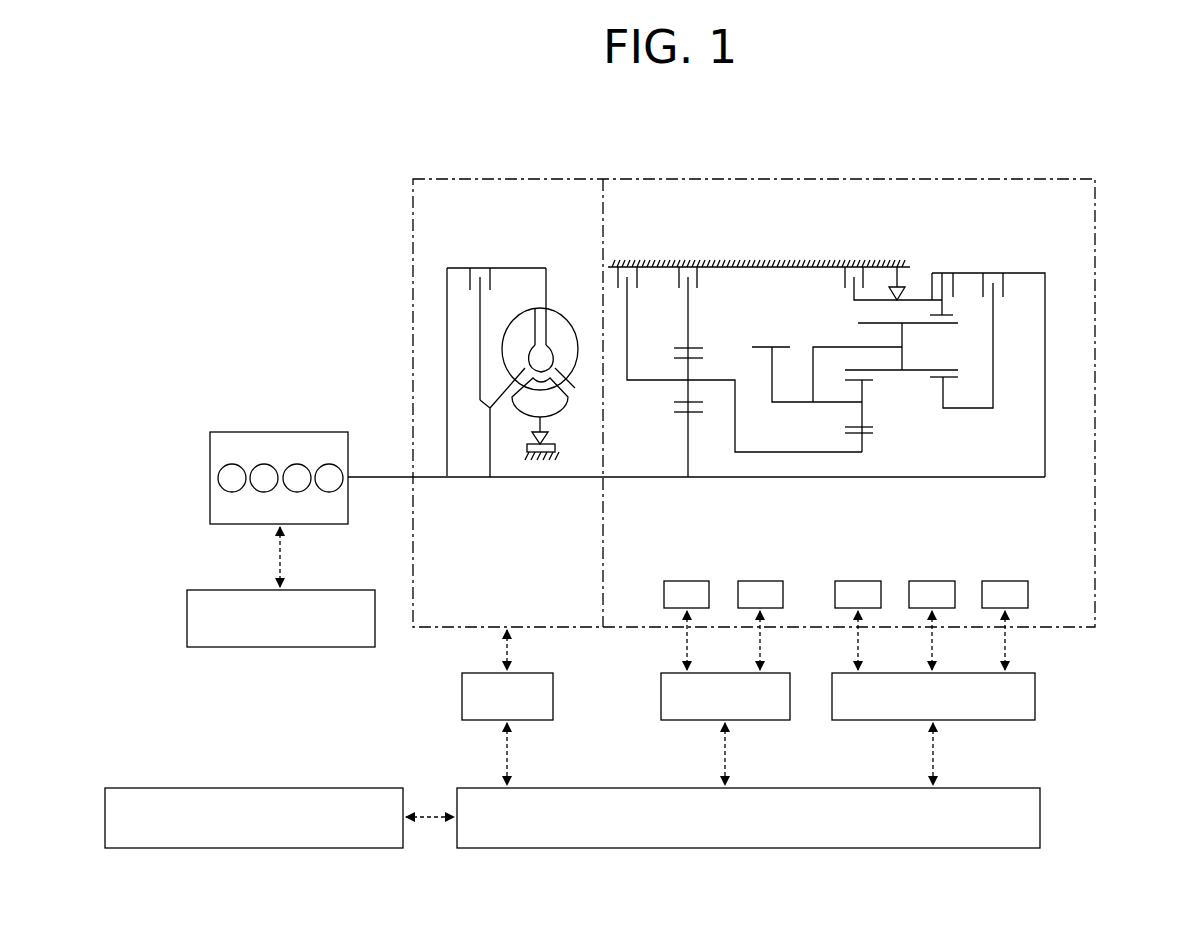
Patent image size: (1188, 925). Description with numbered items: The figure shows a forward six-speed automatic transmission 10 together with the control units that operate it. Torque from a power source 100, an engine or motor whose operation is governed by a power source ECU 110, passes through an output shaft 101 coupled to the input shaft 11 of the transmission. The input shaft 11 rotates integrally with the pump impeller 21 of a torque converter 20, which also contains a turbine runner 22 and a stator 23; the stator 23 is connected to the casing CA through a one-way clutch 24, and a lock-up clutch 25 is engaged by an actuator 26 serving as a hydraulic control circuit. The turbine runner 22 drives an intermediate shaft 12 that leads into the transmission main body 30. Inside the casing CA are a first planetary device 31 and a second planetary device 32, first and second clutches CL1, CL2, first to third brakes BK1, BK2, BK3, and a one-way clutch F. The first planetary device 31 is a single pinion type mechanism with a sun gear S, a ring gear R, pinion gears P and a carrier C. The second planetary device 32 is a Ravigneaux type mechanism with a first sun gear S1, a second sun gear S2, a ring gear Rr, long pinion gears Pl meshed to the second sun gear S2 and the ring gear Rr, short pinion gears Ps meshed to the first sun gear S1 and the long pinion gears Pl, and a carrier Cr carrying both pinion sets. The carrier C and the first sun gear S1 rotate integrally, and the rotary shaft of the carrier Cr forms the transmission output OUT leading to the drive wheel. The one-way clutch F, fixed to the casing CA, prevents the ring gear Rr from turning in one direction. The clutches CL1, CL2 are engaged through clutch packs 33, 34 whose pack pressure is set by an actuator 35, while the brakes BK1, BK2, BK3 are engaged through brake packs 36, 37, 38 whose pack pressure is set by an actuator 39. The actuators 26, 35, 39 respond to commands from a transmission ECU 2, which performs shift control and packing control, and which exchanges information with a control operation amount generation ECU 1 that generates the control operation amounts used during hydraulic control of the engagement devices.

The control operation amount generation ECU 1 is at (231, 788).
The transmission ECU 2 is at (484, 788).
The automatic transmission 10 is at (1108, 167).
The input shaft 11 is at (438, 478).
The intermediate shaft 12 is at (620, 478).
The torque converter 20 is at (431, 178).
The pump impeller 21 is at (572, 323).
The turbine runner 22 is at (507, 323).
The stator 23 is at (566, 402).
The one-way clutch 24 is at (516, 455).
The lock-up clutch 25 is at (484, 250).
The actuator 26 is at (456, 690).
The transmission main body 30 is at (628, 179).
The first planetary device 31 is at (740, 367).
The second planetary device 32 is at (909, 367).
The clutch pack 33 is at (657, 592).
The clutch pack 34 is at (731, 592).
The actuator 35 is at (656, 690).
The brake pack 36 is at (829, 592).
The brake pack 37 is at (904, 592).
The brake pack 38 is at (977, 592).
The actuator 39 is at (825, 686).
The power source 100 is at (237, 431).
The output shaft 101 is at (381, 476).
The power source ECU 110 is at (212, 590).
The first brake BK1 is at (632, 258).
The second brake BK2 is at (858, 258).
The third brake BK3 is at (693, 258).
The first clutch CL1 is at (1003, 267).
The second clutch CL2 is at (947, 267).
The one-way clutch F is at (900, 258).
The casing CA is at (553, 458).
The carrier C is at (658, 378).
The ring gear R is at (700, 345).
The pinion gears P is at (675, 396).
The sun gear S is at (680, 413).
The output shaft OUT is at (826, 362).
The carrier Cr is at (800, 404).
The long pinion gears Pl is at (905, 353).
The short pinion gears Ps is at (865, 402).
The ring gear Rr is at (950, 318).
The first sun gear S1 is at (872, 438).
The second sun gear S2 is at (940, 392).